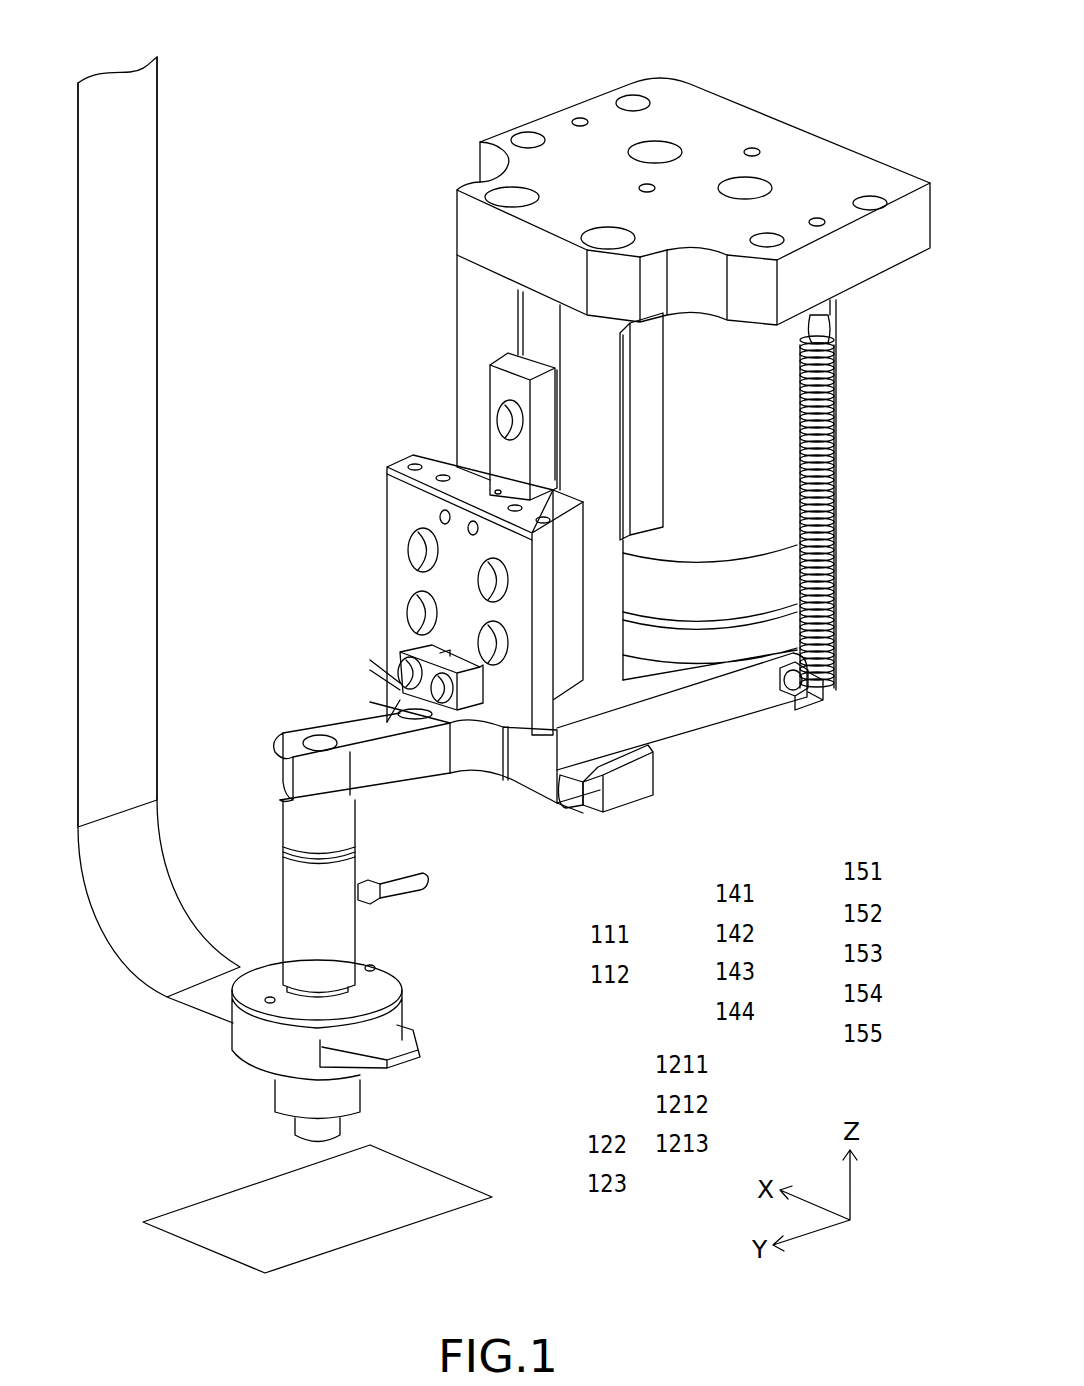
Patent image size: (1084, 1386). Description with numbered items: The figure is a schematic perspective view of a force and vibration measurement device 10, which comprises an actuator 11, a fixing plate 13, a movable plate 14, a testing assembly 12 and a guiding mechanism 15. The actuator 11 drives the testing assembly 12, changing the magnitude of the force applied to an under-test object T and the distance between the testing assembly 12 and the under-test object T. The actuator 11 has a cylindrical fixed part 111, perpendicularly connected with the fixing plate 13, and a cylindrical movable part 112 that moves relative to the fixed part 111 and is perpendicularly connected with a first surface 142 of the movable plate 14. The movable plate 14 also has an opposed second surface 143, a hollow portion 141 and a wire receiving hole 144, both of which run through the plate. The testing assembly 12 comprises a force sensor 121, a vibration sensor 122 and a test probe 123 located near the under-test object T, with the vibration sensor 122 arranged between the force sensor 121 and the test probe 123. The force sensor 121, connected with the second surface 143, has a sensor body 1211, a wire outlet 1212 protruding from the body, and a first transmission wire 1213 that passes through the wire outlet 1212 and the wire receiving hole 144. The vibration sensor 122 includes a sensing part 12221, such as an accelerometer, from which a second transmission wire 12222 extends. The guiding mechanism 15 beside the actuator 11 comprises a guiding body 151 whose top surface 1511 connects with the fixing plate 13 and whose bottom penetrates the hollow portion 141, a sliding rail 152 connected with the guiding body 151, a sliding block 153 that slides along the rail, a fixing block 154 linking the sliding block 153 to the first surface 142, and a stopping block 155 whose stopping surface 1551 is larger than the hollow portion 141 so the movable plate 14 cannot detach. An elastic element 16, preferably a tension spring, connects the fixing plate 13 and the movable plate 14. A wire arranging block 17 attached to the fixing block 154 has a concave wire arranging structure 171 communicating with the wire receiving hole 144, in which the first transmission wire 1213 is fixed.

The force and vibration measurement device 10 is at (810, 27).
The actuator 11 is at (718, 641).
The fixed part 111 is at (762, 453).
The movable part 112 is at (833, 610).
The testing assembly 12 is at (420, 992).
The force sensor 121 is at (423, 971).
The sensor body 1211 is at (297, 920).
The wire outlet 1212 is at (362, 900).
The first transmission wire 1213 is at (393, 880).
The vibration sensor 122 is at (248, 1047).
The sensing part 12221 is at (393, 1048).
The second transmission wire 12222 is at (152, 428).
The test probe 123 is at (288, 1092).
The fixing plate 13 is at (830, 160).
The movable plate 14 is at (540, 780).
The hollow portion 141 is at (627, 670).
The first surface 142 is at (660, 677).
The second surface 143 is at (425, 785).
The wire receiving hole 144 is at (405, 670).
The guiding mechanism 15 is at (577, 644).
The guiding body 151 is at (472, 300).
The top surface 1511 is at (625, 325).
The sliding rail 152 is at (508, 385).
The sliding block 153 is at (477, 473).
The fixing block 154 is at (400, 517).
The stopping block 155 is at (627, 792).
The stopping surface 1551 is at (597, 772).
The elastic element 16 is at (836, 473).
The wire arranging block 17 is at (403, 634).
The wire arranging structure 171 is at (455, 653).
The under-test object T is at (417, 1187).